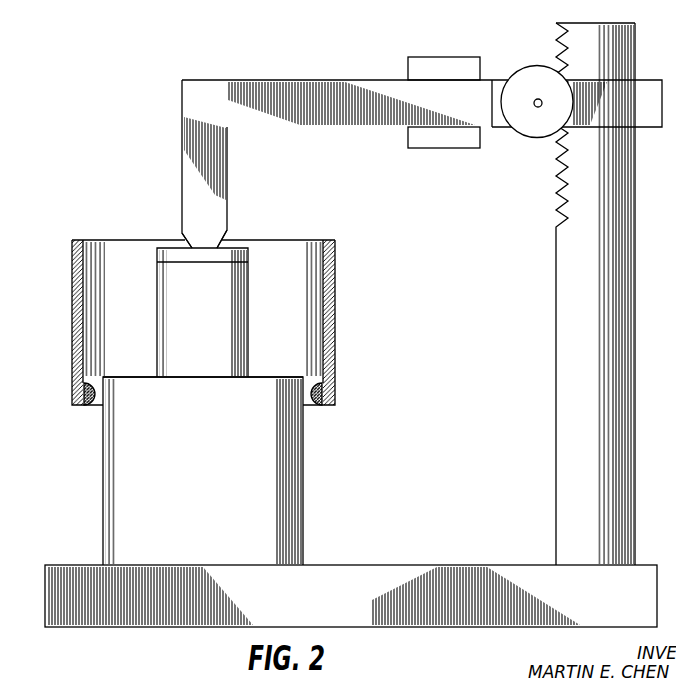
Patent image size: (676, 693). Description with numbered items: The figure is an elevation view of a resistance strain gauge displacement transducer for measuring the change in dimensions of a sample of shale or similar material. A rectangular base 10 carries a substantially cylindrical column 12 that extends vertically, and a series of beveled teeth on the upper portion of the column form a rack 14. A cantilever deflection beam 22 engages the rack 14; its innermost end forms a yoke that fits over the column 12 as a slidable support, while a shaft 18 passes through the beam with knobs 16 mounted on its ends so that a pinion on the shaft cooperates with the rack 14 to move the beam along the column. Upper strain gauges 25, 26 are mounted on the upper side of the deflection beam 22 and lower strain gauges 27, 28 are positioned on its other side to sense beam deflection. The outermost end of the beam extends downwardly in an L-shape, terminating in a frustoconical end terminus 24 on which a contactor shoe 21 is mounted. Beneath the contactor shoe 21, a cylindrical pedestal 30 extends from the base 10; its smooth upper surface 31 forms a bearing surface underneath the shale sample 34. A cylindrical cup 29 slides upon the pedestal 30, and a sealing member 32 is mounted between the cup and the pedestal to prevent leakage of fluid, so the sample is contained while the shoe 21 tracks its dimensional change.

The rectangular base 10 is at (367, 566).
The cylindrical column 12 is at (556, 481).
The rack 14 is at (557, 214).
The knobs 16 is at (537, 65).
The shaft 18 is at (537, 108).
The contactor shoe 21 is at (232, 247).
The cantilever deflection beam 22 is at (216, 80).
The end terminus 24 is at (181, 232).
The upper strain gauge 25 is at (427, 55).
The upper strain gauge 26 is at (455, 57).
The lower strain gauge 27 is at (430, 154).
The lower strain gauge 28 is at (458, 148).
The cylindrical cup 29 is at (334, 325).
The cylindrical pedestal 30 is at (103, 491).
The upper surface 31 is at (300, 376).
The sealing member 32 is at (93, 406).
The shale sample 34 is at (249, 303).